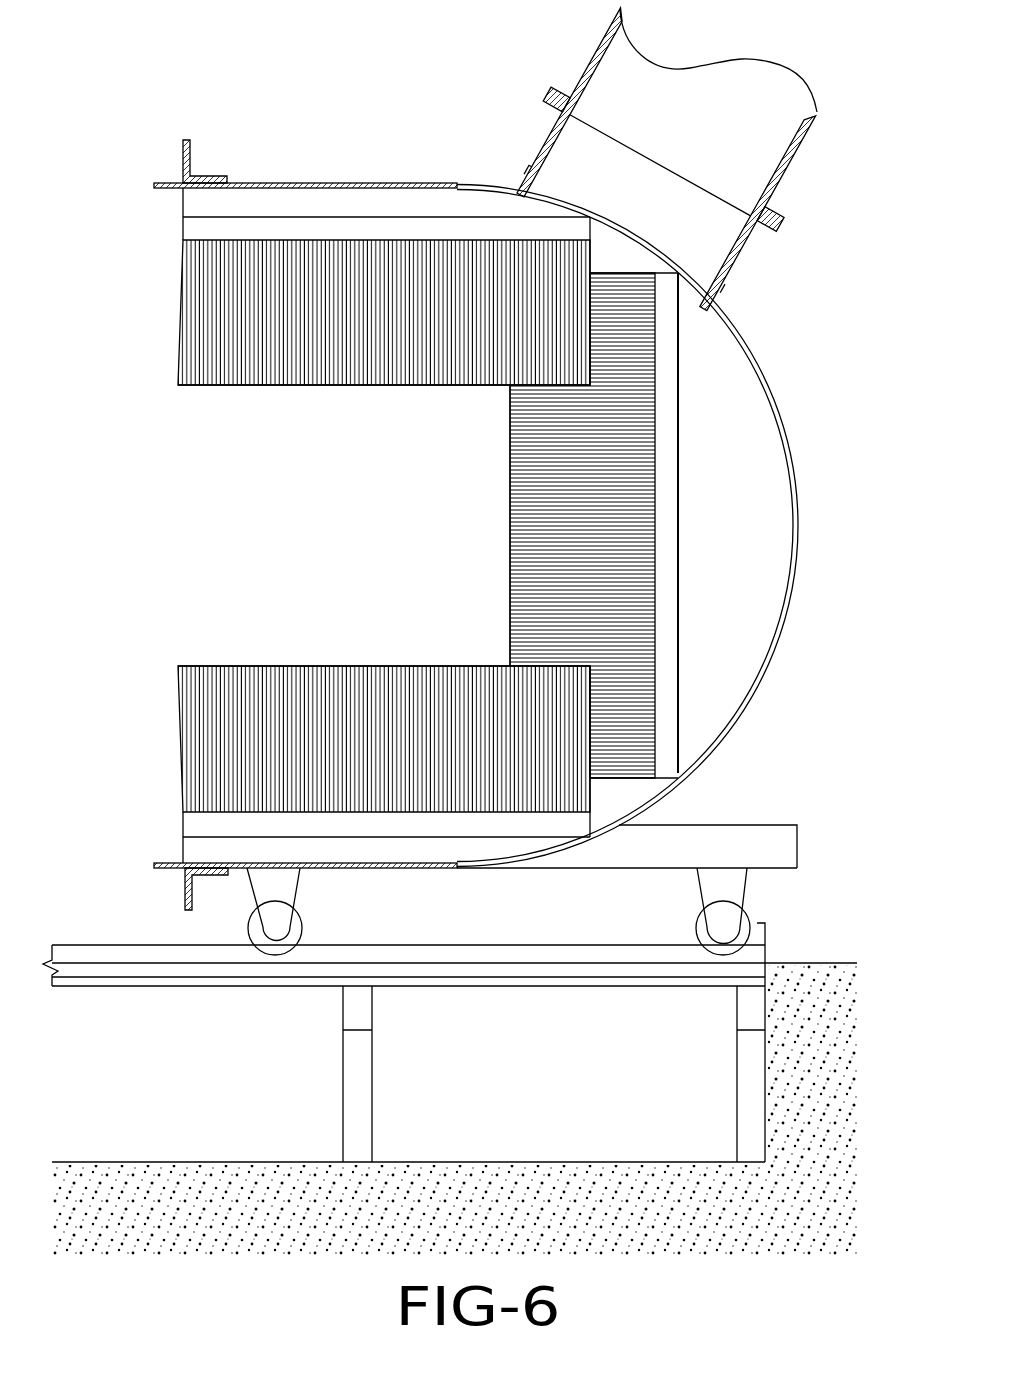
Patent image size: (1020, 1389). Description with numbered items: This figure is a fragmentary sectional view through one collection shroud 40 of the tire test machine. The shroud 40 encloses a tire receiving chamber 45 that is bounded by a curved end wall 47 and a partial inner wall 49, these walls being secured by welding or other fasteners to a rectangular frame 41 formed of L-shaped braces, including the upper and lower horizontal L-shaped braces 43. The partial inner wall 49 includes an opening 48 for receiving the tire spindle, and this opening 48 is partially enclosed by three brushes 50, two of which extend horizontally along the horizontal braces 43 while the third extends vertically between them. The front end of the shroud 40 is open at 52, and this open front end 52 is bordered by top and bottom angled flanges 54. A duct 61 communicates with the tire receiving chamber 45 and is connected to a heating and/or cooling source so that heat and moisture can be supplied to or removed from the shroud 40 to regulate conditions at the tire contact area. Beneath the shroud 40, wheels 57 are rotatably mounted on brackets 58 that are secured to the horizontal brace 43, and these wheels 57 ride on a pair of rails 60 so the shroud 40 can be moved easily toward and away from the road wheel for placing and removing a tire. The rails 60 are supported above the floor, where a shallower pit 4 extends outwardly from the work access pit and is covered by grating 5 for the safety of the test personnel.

The shallower pit 4 is at (710, 1108).
The grating 5 is at (526, 968).
The collection shroud 40 is at (354, 182).
The frame 41 is at (757, 817).
The horizontal L-shaped brace 43 is at (705, 832).
The tire receiving chamber 45 is at (232, 548).
The curved end wall 47 is at (764, 382).
The opening 48 is at (224, 428).
The partial inner wall 49 is at (733, 512).
The brush 50 is at (198, 327).
The open front end 52 is at (163, 864).
The top and bottom angled flanges 54 is at (184, 160).
The wheel 57 is at (300, 925).
The bracket 58 is at (283, 893).
The rail 60 is at (455, 942).
The duct 61 is at (773, 88).